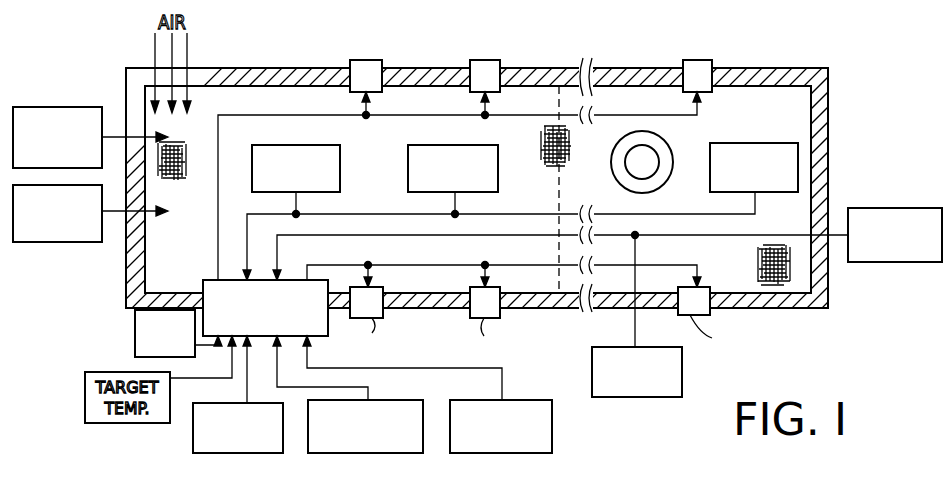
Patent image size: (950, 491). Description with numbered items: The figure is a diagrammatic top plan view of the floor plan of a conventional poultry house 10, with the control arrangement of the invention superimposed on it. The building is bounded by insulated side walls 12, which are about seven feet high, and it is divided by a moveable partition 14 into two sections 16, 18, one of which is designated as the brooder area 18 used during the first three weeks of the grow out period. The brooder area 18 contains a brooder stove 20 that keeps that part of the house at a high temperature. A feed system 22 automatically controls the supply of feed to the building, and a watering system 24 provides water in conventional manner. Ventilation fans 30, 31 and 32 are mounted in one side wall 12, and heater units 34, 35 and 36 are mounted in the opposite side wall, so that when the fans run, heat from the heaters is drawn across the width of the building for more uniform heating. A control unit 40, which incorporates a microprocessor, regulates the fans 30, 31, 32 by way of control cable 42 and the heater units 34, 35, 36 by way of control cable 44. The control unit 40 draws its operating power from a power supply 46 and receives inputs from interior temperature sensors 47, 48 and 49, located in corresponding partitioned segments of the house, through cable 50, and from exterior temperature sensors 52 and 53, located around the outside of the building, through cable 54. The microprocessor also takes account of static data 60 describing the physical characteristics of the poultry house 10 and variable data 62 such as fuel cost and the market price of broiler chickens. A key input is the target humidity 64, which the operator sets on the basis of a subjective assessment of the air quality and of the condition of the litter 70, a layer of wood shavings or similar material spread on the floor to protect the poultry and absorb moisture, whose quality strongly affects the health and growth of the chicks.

The poultry house 10 is at (121, 266).
The side walls 12 is at (230, 68).
The moveable partition 14 is at (558, 103).
The section 16 is at (427, 96).
The brooder area 18 is at (796, 106).
The brooder stove 20 is at (656, 158).
The feed system 22 is at (38, 107).
The watering system 24 is at (60, 243).
The ventilation fan 30 is at (363, 318).
The ventilation fan 31 is at (471, 318).
The ventilation fan 32 is at (702, 315).
The heater unit 34 is at (352, 72).
The heater unit 35 is at (473, 78).
The heater unit 36 is at (689, 70).
The control unit 40 is at (212, 290).
The control cable 42 is at (398, 265).
The control cable 44 is at (330, 118).
The power supply 46 is at (135, 331).
The interior temperature sensor 47 is at (340, 167).
The interior temperature sensor 48 is at (498, 167).
The interior temperature sensor 49 is at (722, 143).
The cable 50 is at (247, 212).
The exterior temperature sensor 52 is at (882, 208).
The exterior temperature sensor 53 is at (627, 397).
The cable 54 is at (277, 255).
The static data 60 is at (248, 453).
The variable data 62 is at (371, 453).
The target humidity 64 is at (478, 453).
The litter 70 is at (179, 165).